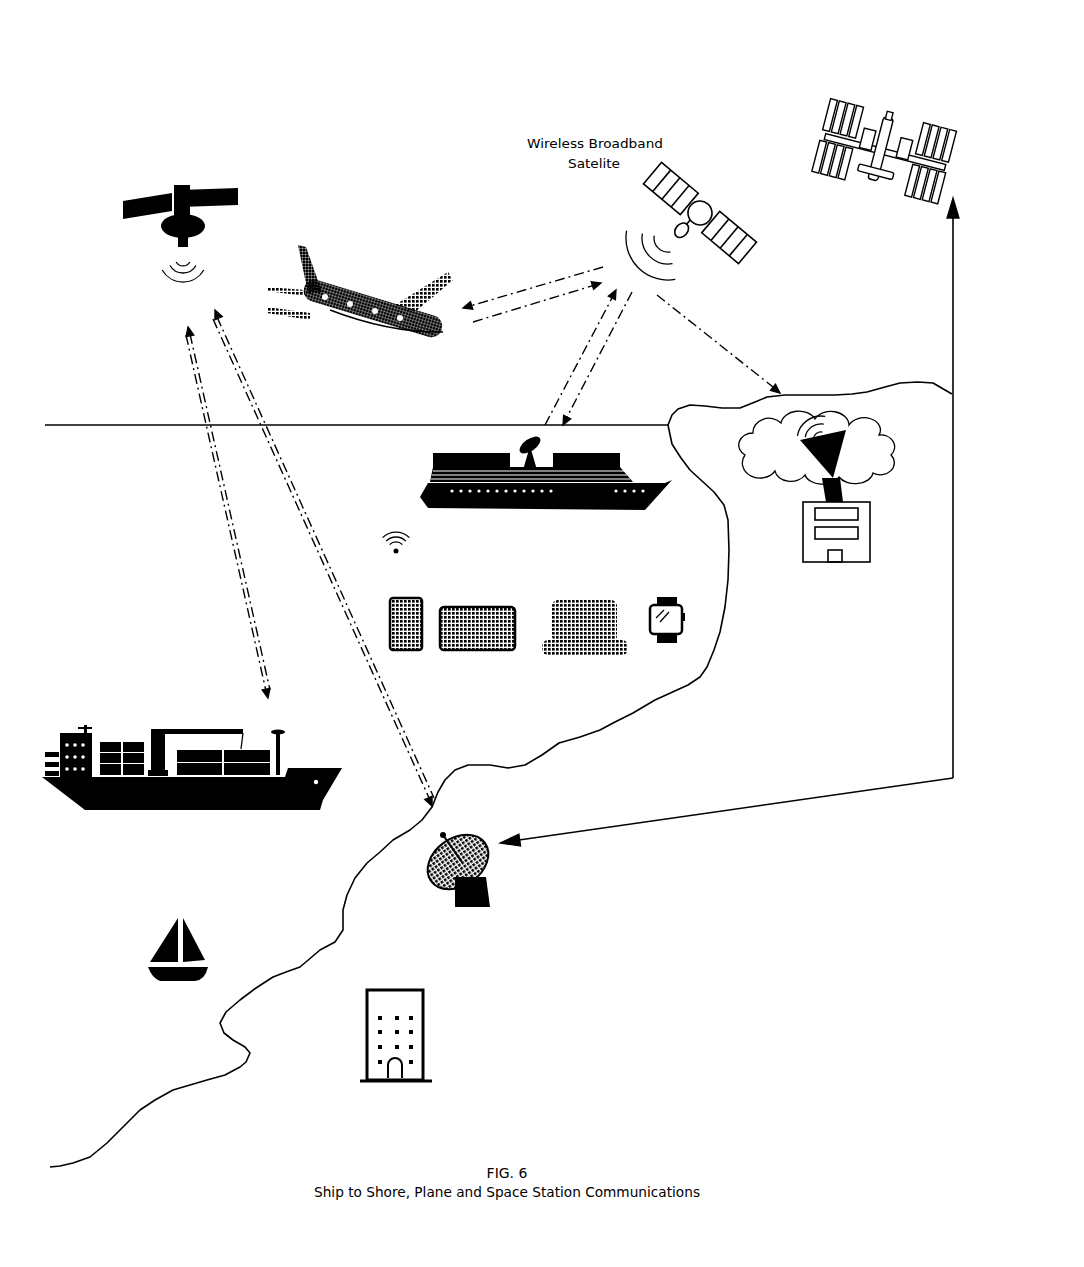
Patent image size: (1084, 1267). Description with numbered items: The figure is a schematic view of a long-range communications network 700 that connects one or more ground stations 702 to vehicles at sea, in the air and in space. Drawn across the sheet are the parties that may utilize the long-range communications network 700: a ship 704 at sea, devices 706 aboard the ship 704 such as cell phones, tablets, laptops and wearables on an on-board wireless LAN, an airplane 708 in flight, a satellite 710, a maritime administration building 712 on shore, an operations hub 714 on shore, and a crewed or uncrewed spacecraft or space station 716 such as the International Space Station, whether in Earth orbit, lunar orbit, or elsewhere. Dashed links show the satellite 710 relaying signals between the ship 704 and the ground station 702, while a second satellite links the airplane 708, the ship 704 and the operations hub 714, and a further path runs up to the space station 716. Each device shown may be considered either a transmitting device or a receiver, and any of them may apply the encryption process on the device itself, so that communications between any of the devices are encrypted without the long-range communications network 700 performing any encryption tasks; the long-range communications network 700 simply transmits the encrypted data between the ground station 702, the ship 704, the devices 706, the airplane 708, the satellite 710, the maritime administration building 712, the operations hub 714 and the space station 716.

The long-range communications network 700 is at (463, 160).
The ground station 702 is at (498, 888).
The ship 704 is at (91, 820).
The devices 706 is at (667, 653).
The airplane 708 is at (385, 266).
The satellite 710 is at (189, 136).
The maritime administration building 712 is at (448, 1041).
The operations hub 714 is at (876, 556).
The space station 716 is at (887, 97).